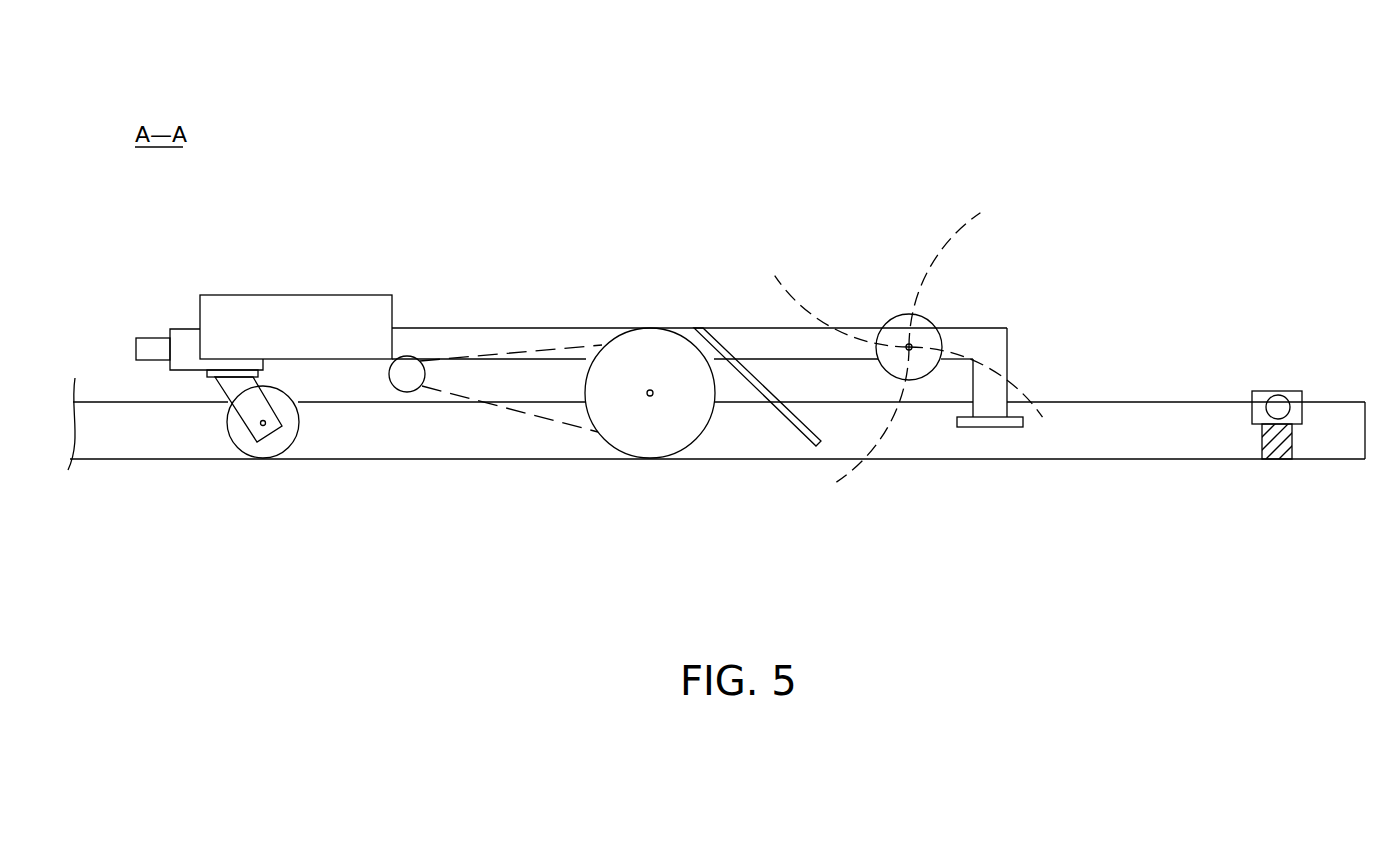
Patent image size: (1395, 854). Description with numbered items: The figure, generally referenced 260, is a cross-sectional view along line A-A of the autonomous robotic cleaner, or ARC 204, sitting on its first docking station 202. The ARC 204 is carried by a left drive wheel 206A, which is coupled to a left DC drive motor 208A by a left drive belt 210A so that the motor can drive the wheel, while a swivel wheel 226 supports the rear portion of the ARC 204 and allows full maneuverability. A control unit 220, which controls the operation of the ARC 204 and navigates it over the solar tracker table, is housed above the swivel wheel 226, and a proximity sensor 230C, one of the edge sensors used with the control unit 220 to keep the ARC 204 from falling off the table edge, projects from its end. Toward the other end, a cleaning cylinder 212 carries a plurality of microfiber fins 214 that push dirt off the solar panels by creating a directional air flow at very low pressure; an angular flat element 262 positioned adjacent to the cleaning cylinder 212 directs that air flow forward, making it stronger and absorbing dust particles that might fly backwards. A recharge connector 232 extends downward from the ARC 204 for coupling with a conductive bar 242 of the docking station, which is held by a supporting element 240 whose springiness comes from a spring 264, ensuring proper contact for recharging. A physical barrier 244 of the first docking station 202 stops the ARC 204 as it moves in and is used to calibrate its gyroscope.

The first docking station 202 is at (123, 460).
The ARC 204 is at (698, 316).
The left drive wheel 206A is at (653, 350).
The left DC drive motor 208A is at (407, 373).
The left drive belt 210A is at (552, 348).
The cleaning cylinder 212 is at (898, 327).
The plurality of microfiber fins 214 is at (942, 238).
The control unit 220 is at (315, 308).
The swivel wheel 226 is at (265, 448).
The proximity sensor 230C is at (155, 337).
The recharge connector 232 is at (991, 388).
The supporting element 240 is at (1295, 397).
The conductive bar 242 is at (1277, 407).
The physical barrier 244 is at (128, 413).
The cross-sectional view of the robotic cleaner 260 is at (1160, 92).
The angular flat element 262 is at (793, 423).
The spring 264 is at (1293, 442).